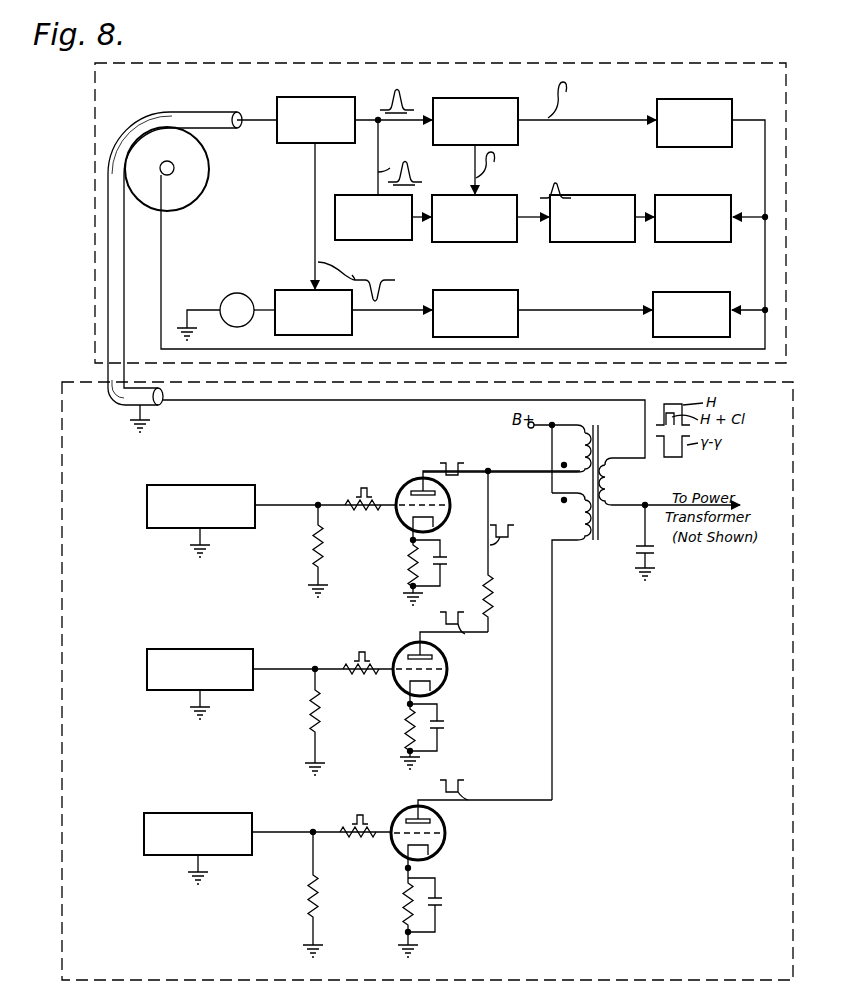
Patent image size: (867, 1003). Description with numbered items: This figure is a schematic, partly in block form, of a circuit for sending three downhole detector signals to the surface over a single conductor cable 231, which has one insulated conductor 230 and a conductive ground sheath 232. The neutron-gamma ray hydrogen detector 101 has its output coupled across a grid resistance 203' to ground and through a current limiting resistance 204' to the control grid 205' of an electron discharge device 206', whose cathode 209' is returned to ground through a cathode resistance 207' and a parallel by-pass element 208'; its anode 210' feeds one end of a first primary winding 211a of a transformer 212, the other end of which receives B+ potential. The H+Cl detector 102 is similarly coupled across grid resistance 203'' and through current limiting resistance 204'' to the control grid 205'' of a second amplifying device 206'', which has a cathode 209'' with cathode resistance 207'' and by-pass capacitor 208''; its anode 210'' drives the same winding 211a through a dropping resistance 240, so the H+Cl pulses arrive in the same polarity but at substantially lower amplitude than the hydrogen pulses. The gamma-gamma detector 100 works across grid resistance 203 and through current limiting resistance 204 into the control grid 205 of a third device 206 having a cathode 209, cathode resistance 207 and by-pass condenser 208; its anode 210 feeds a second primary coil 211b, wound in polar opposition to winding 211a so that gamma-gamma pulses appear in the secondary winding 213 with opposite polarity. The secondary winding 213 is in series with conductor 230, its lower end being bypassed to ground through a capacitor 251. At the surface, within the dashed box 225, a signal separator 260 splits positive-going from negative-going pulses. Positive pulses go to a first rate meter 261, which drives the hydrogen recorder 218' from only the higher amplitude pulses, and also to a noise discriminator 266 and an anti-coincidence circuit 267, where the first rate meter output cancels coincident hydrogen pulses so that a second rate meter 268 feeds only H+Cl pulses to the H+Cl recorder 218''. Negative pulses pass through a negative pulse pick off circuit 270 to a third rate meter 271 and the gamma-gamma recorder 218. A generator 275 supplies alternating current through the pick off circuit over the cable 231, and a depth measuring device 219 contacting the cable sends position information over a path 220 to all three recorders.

The dashed box 225 is at (431, 63).
The signal separator 260 is at (314, 90).
The No. 1 rate meter 261 is at (494, 98).
The neutron-gamma ray hydrogen recorder 218' is at (694, 108).
The H+Cl recorder 218'' is at (693, 204).
The gamma-gamma recorder 218 is at (691, 300).
The depth measuring device 219 is at (202, 174).
The path 220 is at (163, 250).
The single conductor cable 231 is at (110, 268).
The conductive ground sheath 232 is at (112, 420).
The single insulated conductor 230 is at (292, 401).
The noise discriminator 266 is at (355, 178).
The anti-coincidence circuit 267 is at (530, 217).
The No. 2 rate meter 268 is at (597, 195).
The negative pulse pick off circuit 270 is at (291, 290).
The No. 3 rate meter 271 is at (480, 283).
The generator 275 is at (241, 293).
The transformer 212 is at (608, 423).
The first primary winding 211a is at (578, 438).
The second primary coil 211b is at (570, 514).
The secondary winding 213 is at (620, 490).
The capacitor 251 is at (637, 555).
The neutron-gamma ray hydrogen detector unit 101 is at (224, 485).
The neutron-gamma ray H+Cl detector 102 is at (203, 649).
The gamma-gamma radiation detector 100 is at (195, 813).
The grid resistance 203' is at (293, 551).
The grid resistance 203'' is at (290, 722).
The grid resistance 203 is at (281, 894).
The current limiting resistance 204' is at (359, 516).
The current limiting resistance 204'' is at (354, 679).
The current limiting resistance 204 is at (358, 845).
The anode 210' is at (488, 497).
The anode 210'' is at (442, 654).
The anode 210 is at (471, 820).
The control grid 205' is at (442, 509).
The control grid 205'' is at (447, 672).
The control grid 205 is at (448, 837).
The electron discharge device 206' is at (450, 528).
The amplifying device 206'' is at (454, 692).
The electron discharge device 206 is at (456, 856).
The cathode 209' is at (447, 546).
The cathode 209'' is at (450, 710).
The cathode 209 is at (449, 873).
The cathode resistance 207' is at (386, 572).
The cathode resistance 207'' is at (384, 736).
The cathode resistance 207 is at (383, 912).
The cathode by-pass resistance 208' is at (450, 565).
The cathode by-pass capacitor 208'' is at (456, 727).
The by-pass condenser 208 is at (452, 905).
The dropping resistance 240 is at (492, 581).